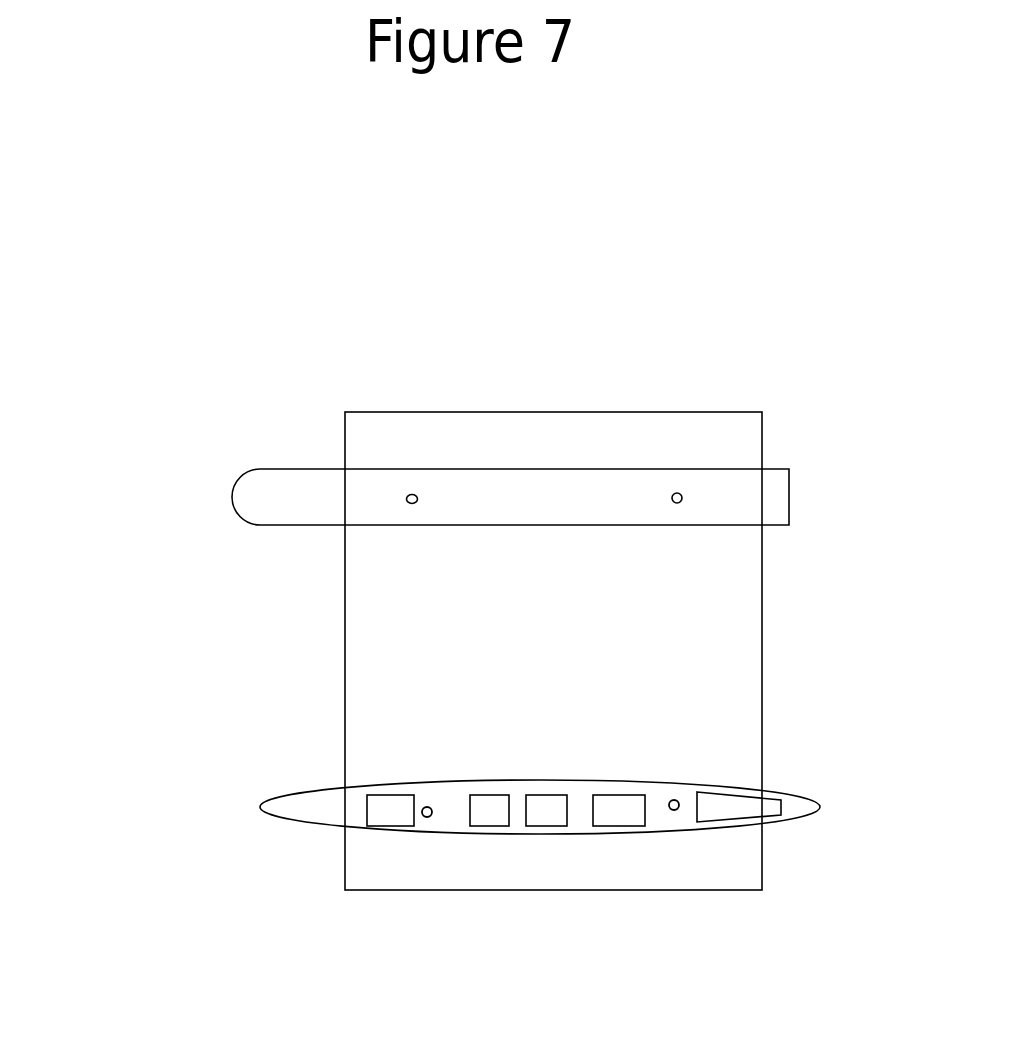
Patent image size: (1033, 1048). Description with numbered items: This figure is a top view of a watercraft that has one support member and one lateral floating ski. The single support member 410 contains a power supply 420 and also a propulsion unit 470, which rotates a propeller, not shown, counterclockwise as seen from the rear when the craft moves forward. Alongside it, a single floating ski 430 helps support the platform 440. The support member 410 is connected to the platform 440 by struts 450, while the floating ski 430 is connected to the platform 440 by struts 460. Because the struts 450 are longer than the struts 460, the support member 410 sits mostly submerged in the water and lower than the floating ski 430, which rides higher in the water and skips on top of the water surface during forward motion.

The support member 410 is at (316, 808).
The power supply 420 is at (404, 797).
The floating ski 430 is at (272, 497).
The platform 440 is at (370, 650).
The struts 450 is at (668, 812).
The struts 460 is at (663, 497).
The propulsion unit 470 is at (735, 807).